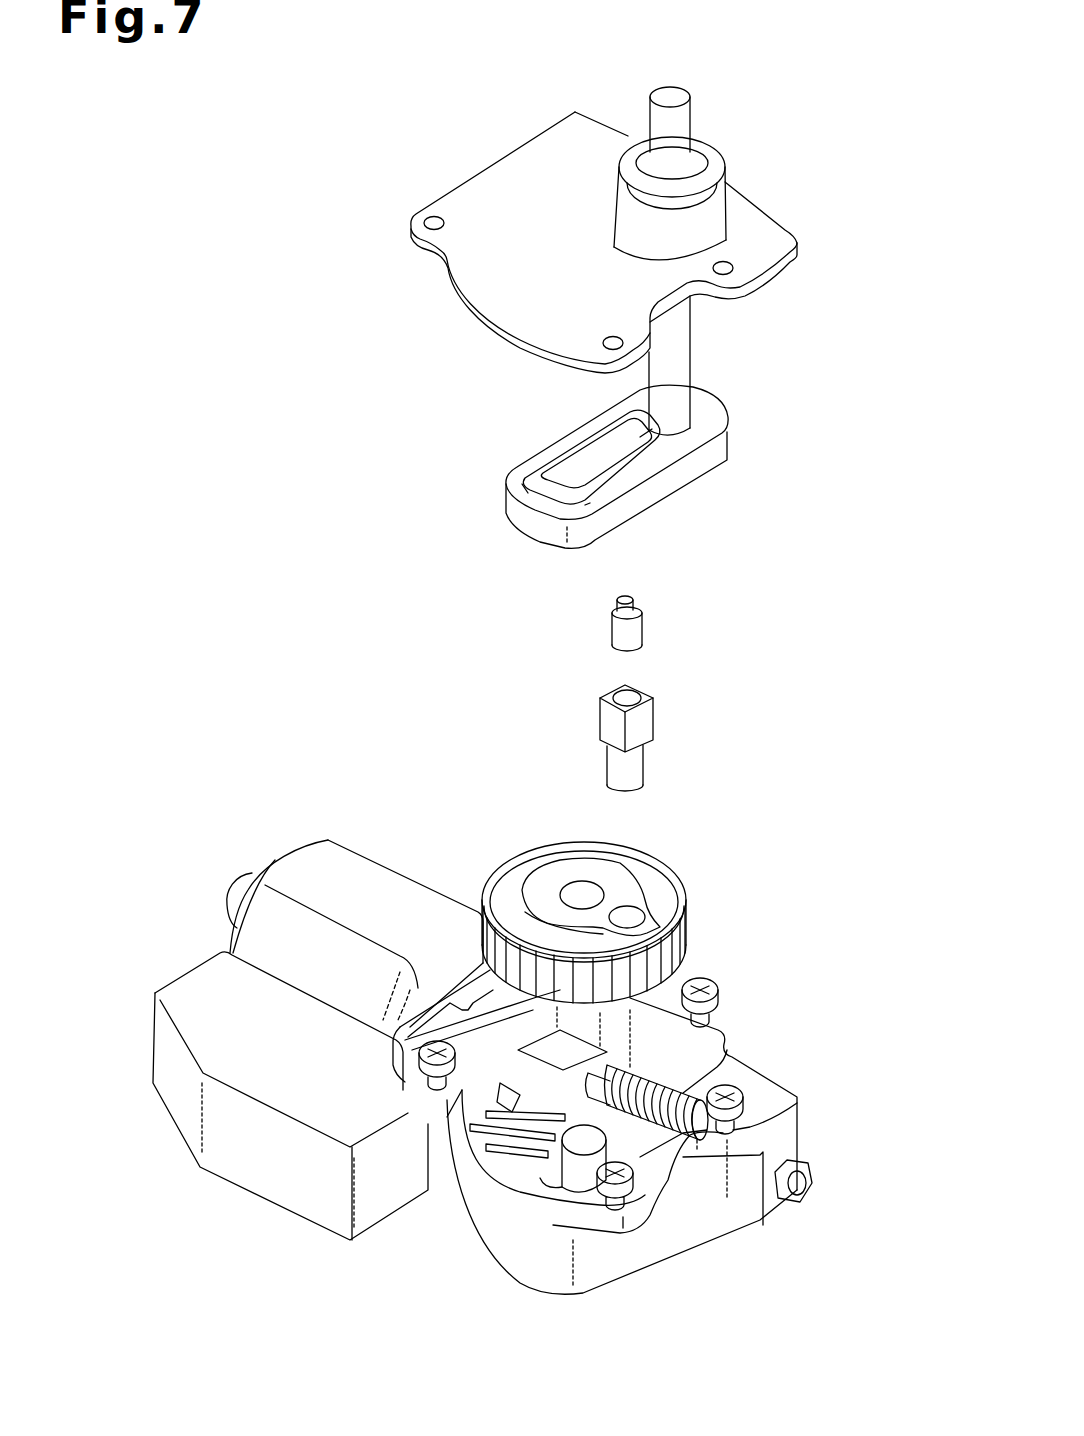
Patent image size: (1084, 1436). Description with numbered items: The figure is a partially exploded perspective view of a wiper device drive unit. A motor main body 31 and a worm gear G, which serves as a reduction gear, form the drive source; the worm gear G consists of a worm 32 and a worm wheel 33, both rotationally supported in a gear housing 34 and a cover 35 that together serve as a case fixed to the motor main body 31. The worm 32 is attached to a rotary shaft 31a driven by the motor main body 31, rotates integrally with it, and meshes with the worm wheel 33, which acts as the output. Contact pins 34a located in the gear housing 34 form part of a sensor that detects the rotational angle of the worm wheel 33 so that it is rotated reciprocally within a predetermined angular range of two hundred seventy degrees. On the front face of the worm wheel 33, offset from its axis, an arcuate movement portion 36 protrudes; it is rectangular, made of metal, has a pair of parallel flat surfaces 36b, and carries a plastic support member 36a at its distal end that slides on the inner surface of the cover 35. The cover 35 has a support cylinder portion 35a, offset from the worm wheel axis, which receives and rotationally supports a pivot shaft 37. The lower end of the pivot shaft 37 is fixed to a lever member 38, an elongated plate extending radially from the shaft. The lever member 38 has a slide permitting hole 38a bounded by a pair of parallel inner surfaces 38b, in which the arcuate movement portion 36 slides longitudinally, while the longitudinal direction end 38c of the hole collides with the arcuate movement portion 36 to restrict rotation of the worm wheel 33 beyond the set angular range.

The motor main body 31 is at (395, 878).
The rotary shaft 31a is at (610, 1060).
The worm 32 is at (730, 1043).
The worm wheel 33 is at (687, 943).
The gear housing 34 is at (622, 1173).
The contact pins 34a is at (507, 1097).
The cover 35 is at (499, 172).
The support cylinder portion 35a is at (717, 207).
The arcuate movement portion 36 is at (663, 738).
The support member 36a is at (635, 630).
The parallel flat surfaces 36b is at (647, 723).
The pivot shaft 37 is at (683, 347).
The lever member 38 is at (620, 466).
The slide permitting hole 38a is at (573, 467).
The parallel inner surfaces 38b is at (555, 470).
The longitudinal direction end 38c is at (640, 437).
The worm gear G is at (604, 1064).